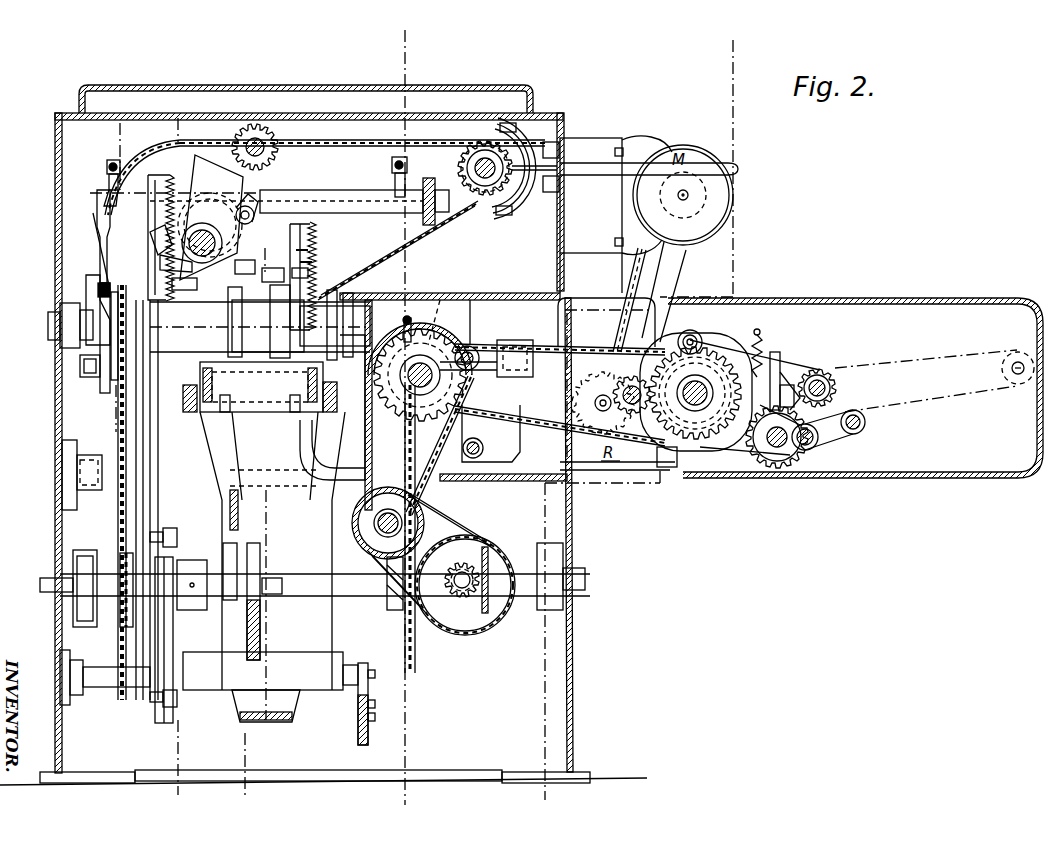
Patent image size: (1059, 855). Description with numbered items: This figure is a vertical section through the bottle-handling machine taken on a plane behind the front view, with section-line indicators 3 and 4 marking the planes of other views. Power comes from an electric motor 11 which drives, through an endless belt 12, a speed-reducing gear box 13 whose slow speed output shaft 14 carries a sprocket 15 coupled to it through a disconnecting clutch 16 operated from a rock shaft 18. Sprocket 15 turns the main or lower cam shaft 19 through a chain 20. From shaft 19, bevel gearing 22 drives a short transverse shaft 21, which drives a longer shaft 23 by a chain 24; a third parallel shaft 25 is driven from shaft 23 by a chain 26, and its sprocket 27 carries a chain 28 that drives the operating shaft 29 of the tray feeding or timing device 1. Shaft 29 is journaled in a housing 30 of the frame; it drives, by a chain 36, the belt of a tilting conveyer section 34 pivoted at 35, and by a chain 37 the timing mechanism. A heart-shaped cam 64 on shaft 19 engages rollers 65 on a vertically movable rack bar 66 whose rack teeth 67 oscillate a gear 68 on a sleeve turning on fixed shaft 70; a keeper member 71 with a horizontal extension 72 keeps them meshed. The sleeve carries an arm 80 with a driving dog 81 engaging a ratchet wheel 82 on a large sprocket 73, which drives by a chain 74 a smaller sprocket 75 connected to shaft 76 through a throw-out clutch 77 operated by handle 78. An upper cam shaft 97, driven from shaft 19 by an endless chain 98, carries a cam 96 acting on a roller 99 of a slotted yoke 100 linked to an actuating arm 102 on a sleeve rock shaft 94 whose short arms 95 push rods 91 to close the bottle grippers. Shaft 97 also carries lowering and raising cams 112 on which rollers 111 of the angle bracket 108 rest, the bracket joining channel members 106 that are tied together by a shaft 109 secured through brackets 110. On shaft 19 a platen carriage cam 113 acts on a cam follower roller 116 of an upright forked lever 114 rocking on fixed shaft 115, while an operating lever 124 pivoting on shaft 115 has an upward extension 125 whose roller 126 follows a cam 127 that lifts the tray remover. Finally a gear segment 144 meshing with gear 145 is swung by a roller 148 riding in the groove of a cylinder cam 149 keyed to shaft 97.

The tray feeding or timing device 1 is at (906, 336).
The section line 3- 3 is at (775, 82).
The section line 4- 4 is at (405, 62).
The electric motor 11 is at (735, 196).
The endless belt 12 is at (688, 277).
The speed-reducing gear box 13 is at (586, 300).
The slow speed output shaft 14 is at (157, 130).
The sprocket 15 is at (404, 326).
The disconnecting clutch 16 is at (470, 300).
The rock shaft 18 is at (484, 448).
The main or lower cam shaft 19 is at (352, 594).
The chain 20 is at (416, 428).
The short transverse shaft 21 is at (462, 572).
The bevel gearing 22 is at (500, 622).
The longer shaft 23 is at (378, 530).
The chain 24 is at (450, 522).
The third parallel shaft 25 is at (445, 372).
The chain 26 is at (378, 432).
The sprocket 27 is at (442, 297).
The chain 28 is at (582, 351).
The operating shaft 29 is at (690, 412).
The housing 30 is at (866, 300).
The section of belt conveyer 34 is at (935, 358).
The pivot 35 is at (1015, 378).
The chain 36 is at (770, 362).
The chain 37 is at (740, 457).
The heart-shaped cam 64 is at (165, 630).
The rollers 65 is at (172, 529).
The rack bar 66 is at (150, 495).
The rack teeth 67 is at (163, 198).
The gear 68 is at (282, 272).
The fixed shaft 70 is at (160, 262).
The keeper member 71 is at (150, 244).
The horizontal extension 72 is at (196, 222).
The large sprocket 73 is at (317, 241).
The chain 74 is at (420, 234).
The smaller sprocket 75 is at (462, 168).
The shaft 76 is at (505, 152).
The throw-out clutch 77 is at (530, 198).
The handle 78 is at (736, 162).
The arm 80 is at (252, 222).
The driving dog 81 is at (224, 200).
The ratchet wheel 82 is at (255, 265).
The rods 91 is at (392, 164).
The sleeve rock shaft 94 is at (344, 196).
The short arms 95 is at (396, 198).
The cam 96 is at (100, 356).
The upper cam shaft 97 is at (127, 345).
The endless chain 98 is at (121, 515).
The roller 99 is at (112, 394).
The slotted yoke 100 is at (100, 388).
The actuating arm 102 is at (97, 235).
The channel members 106 is at (188, 416).
The central arm 108 is at (313, 264).
The shaft 109 is at (78, 484).
The brackets 110 is at (355, 470).
The rollers 111 is at (310, 280).
The lowering and raising cams 112 is at (262, 318).
The platen carriage cam 113 is at (240, 500).
The upright forked lever 114 is at (282, 481).
The fixed shaft 115 is at (120, 688).
The cam follower roller 116 is at (237, 546).
The operating lever 124 is at (294, 704).
The upward extension 125 is at (261, 630).
The roller 126 is at (264, 586).
The cam 127 is at (260, 645).
The gear segment 144 is at (276, 168).
The gear 145 is at (267, 151).
The roller 148 is at (172, 283).
The cylinder cam 149 is at (108, 300).